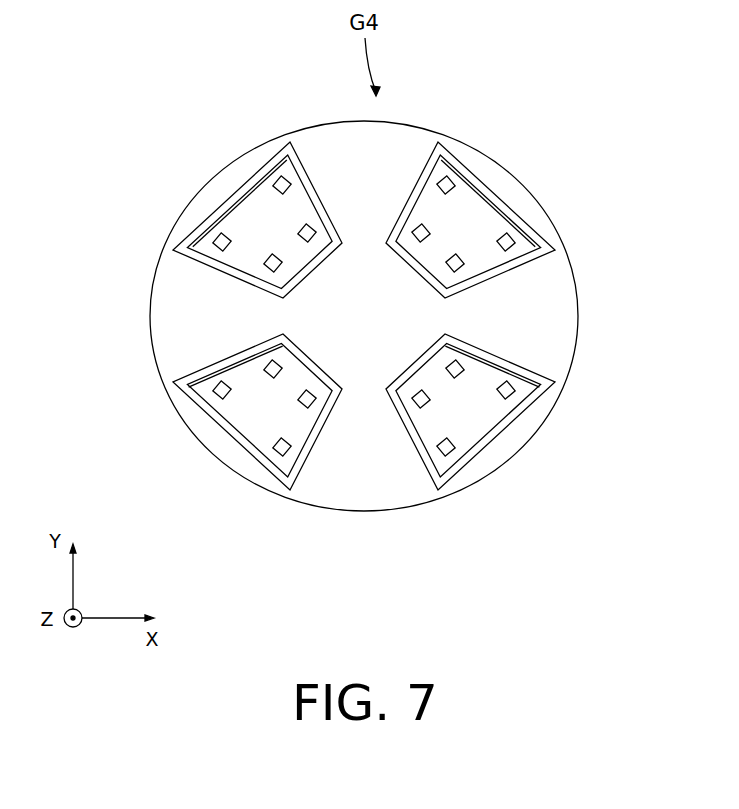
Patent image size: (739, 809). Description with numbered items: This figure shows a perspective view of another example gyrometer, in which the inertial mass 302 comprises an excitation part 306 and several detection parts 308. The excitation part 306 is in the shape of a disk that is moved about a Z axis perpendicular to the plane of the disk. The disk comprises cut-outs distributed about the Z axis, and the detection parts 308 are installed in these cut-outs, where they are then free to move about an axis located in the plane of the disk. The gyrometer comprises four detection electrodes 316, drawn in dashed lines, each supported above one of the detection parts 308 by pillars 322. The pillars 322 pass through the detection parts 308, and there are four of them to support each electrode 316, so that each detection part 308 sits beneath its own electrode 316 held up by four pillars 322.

The inertial mass 302 is at (212, 163).
The excitation part 306 is at (177, 330).
The detection parts 308 is at (468, 425).
The detection electrodes 316 is at (200, 262).
The pillars 322 is at (456, 181).